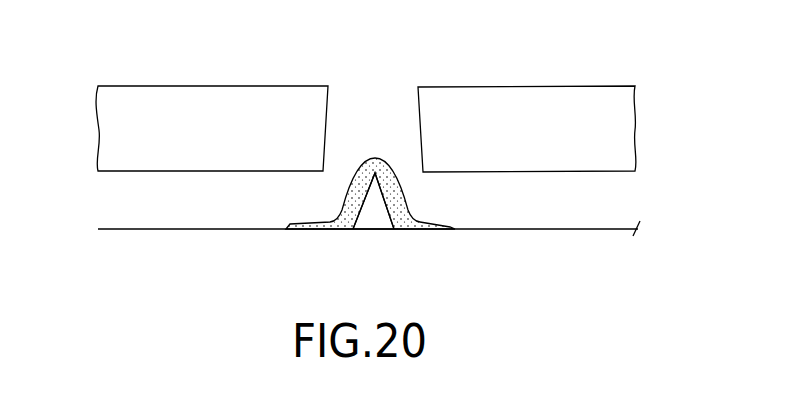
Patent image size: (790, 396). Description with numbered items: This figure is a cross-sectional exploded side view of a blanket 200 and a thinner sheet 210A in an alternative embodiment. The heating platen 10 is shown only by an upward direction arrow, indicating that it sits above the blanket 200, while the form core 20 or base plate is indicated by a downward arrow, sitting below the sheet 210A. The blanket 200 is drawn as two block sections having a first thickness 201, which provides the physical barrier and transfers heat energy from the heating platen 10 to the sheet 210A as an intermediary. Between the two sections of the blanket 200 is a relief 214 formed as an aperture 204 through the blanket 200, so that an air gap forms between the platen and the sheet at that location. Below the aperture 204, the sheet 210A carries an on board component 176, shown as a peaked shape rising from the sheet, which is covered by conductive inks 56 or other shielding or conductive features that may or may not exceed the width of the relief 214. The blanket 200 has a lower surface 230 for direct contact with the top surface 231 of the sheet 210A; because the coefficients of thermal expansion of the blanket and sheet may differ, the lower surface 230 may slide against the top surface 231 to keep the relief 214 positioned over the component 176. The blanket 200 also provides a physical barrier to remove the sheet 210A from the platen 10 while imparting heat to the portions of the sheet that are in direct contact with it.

The heating platen 10 is at (39, 50).
The form core 20 is at (40, 233).
The blanket 200 is at (648, 158).
The first thickness 201 is at (575, 140).
The aperture 204 is at (344, 92).
The relief 214 is at (400, 95).
The lower surface 230 is at (110, 171).
The top surface 231 is at (116, 229).
The thinner sheet 210A is at (647, 228).
The conductive inks 56 is at (289, 225).
The on board component 176 is at (375, 220).